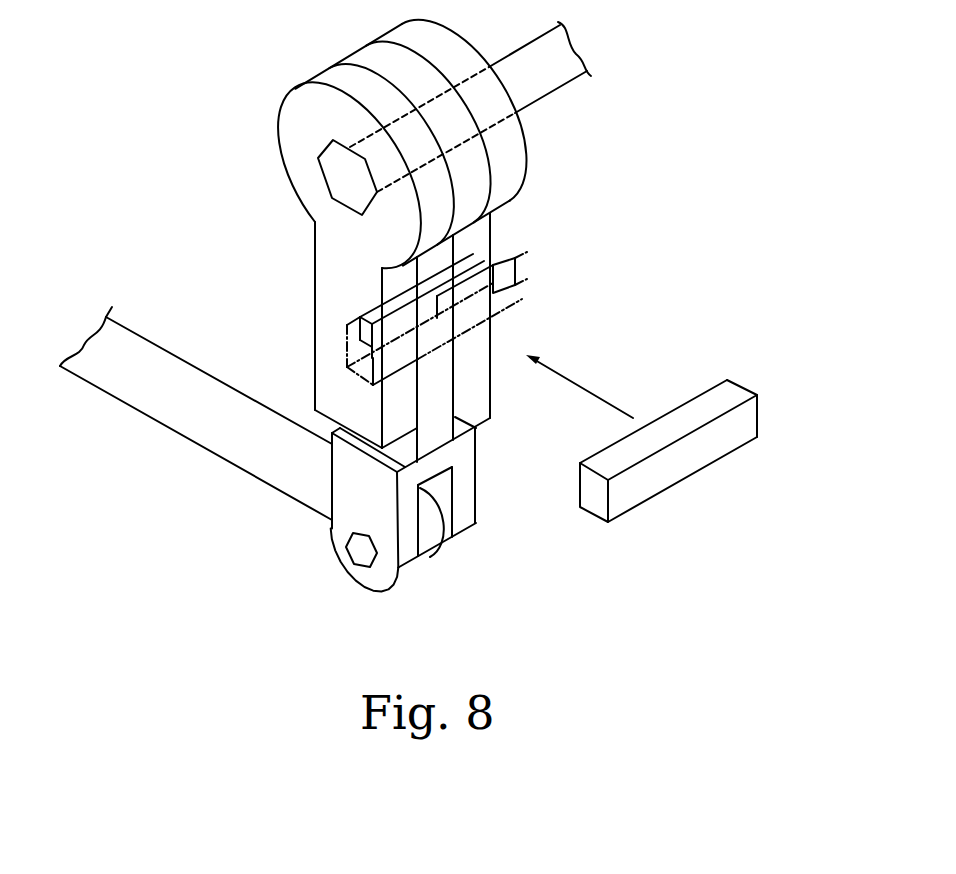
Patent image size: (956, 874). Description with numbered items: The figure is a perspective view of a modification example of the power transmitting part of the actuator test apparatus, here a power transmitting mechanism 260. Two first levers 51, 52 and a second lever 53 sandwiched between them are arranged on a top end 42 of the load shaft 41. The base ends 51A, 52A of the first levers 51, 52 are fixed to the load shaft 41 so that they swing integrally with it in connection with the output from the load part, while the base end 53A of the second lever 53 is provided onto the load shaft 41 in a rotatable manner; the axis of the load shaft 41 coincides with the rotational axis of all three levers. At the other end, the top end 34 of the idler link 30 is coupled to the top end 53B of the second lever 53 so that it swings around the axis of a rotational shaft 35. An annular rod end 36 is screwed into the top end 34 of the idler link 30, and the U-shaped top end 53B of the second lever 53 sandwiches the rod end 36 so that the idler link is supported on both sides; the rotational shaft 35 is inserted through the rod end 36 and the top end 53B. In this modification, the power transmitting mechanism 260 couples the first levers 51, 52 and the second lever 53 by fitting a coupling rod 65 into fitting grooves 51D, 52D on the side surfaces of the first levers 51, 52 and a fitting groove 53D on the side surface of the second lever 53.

The power transmitting mechanism 260 is at (139, 138).
The idler link 30 is at (93, 387).
The top end of the idler link 34 is at (307, 507).
The rotational shaft 35 is at (350, 570).
The rod end 36 is at (424, 560).
The load shaft 41 is at (543, 97).
The top end of the load shaft 42 is at (322, 178).
The first lever 51 is at (313, 231).
The base end of the first lever 51A is at (281, 143).
The fitting groove 51D is at (345, 342).
The first lever 52 is at (492, 224).
The base end of the first lever 52A is at (527, 168).
The fitting groove 52D is at (475, 281).
The second lever 53 is at (455, 380).
The base end of the second lever 53A is at (353, 62).
The top end of the second lever 53B is at (477, 466).
The fitting groove 53D is at (473, 310).
The coupling rod 65 is at (512, 262).